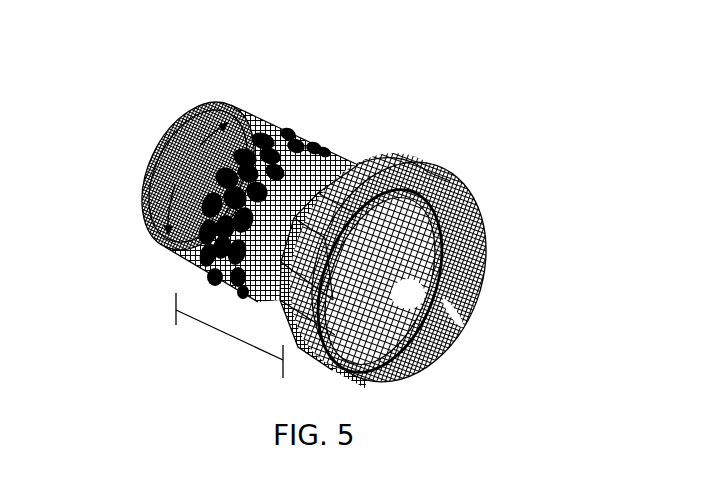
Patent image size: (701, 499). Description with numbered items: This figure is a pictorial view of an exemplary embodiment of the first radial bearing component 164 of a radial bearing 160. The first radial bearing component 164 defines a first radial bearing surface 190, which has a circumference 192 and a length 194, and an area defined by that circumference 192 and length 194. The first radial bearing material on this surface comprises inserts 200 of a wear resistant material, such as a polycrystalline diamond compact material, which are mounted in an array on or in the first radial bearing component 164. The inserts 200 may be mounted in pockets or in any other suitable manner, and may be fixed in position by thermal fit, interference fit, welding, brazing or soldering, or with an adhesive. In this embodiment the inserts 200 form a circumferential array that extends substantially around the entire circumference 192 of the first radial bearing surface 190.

The radial bearing 160 is at (95, 128).
The first radial bearing component 164 is at (422, 117).
The first radial bearing surface 190 is at (256, 120).
The circumference 192 is at (195, 178).
The length 194 is at (215, 333).
The inserts 200 is at (325, 130).